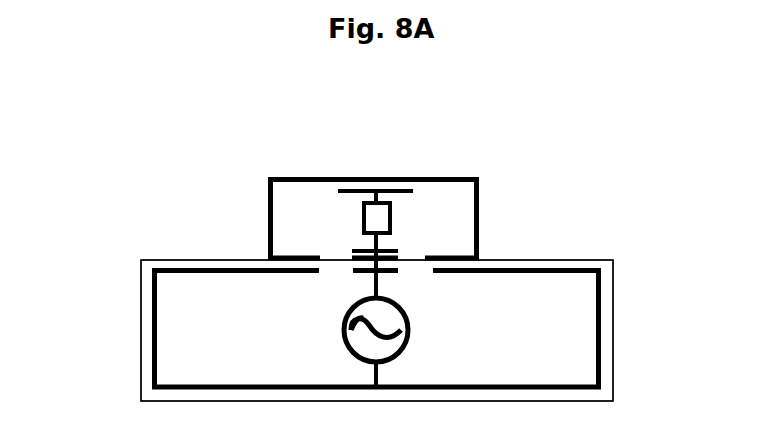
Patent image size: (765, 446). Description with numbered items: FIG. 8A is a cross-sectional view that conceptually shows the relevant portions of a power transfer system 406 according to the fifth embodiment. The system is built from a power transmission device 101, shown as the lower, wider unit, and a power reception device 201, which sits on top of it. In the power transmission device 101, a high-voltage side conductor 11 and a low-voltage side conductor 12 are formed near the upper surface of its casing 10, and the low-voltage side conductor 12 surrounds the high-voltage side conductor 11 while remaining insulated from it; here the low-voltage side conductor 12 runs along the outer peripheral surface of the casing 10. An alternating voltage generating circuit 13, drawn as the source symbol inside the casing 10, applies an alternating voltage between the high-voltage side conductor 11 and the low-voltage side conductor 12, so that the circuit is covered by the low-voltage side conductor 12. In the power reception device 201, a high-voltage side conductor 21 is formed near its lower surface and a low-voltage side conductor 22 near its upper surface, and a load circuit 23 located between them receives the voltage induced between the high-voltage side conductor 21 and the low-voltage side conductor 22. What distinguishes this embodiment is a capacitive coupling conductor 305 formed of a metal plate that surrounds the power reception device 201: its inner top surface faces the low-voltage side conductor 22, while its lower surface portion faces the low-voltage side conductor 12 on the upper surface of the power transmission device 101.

The casing 10 is at (613, 260).
The power transmission device 101 is at (118, 353).
The high-voltage side conductor 11 is at (364, 271).
The low-voltage side conductor 12 is at (601, 326).
The alternating voltage generating circuit 13 is at (410, 326).
The power reception device 201 is at (266, 212).
The high-voltage side conductor 21 is at (396, 249).
The low-voltage side conductor 22 is at (353, 190).
The load circuit 23 is at (362, 217).
The capacitive coupling conductor 305 is at (480, 223).
The power transfer system 406 is at (529, 154).